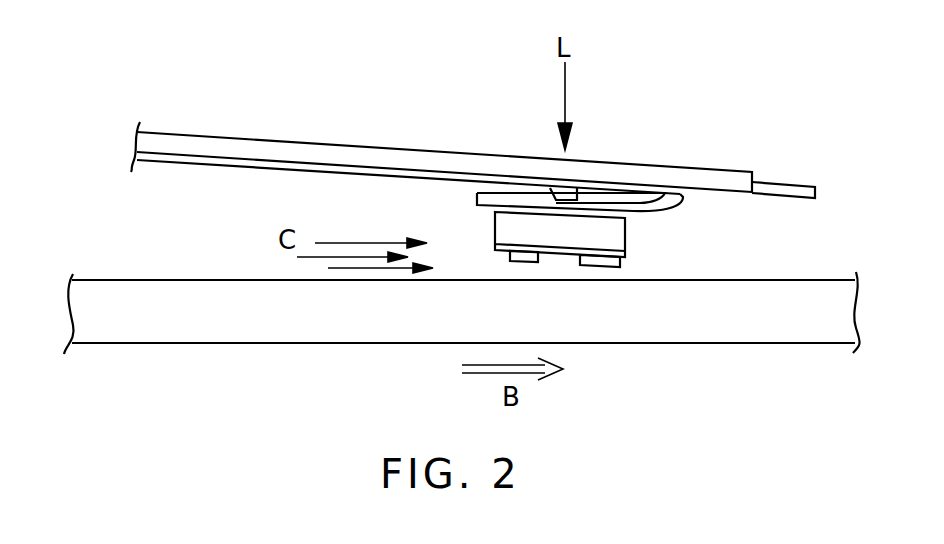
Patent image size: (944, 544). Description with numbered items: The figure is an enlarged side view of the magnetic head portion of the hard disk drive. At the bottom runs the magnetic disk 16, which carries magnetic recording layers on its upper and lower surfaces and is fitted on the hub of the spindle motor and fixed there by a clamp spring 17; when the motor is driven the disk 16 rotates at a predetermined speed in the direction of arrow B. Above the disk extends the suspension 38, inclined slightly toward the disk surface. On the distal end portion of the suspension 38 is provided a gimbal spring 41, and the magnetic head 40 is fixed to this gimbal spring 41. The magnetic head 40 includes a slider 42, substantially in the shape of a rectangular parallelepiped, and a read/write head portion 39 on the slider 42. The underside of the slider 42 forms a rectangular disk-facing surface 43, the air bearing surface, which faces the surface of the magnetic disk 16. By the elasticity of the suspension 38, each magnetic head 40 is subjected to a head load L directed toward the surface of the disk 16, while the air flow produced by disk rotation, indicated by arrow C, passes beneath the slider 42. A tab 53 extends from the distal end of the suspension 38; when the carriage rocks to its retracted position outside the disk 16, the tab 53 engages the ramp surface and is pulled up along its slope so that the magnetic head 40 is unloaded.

The magnetic disk 16 is at (272, 343).
The clamp spring 17 is at (792, 279).
The suspension 38 is at (307, 145).
The read/write head portion 39 is at (615, 241).
The magnetic head 40 is at (460, 226).
The gimbal spring 41 is at (482, 193).
The slider 42 is at (590, 226).
The disk-facing surface 43 is at (558, 278).
The tab 53 is at (790, 192).